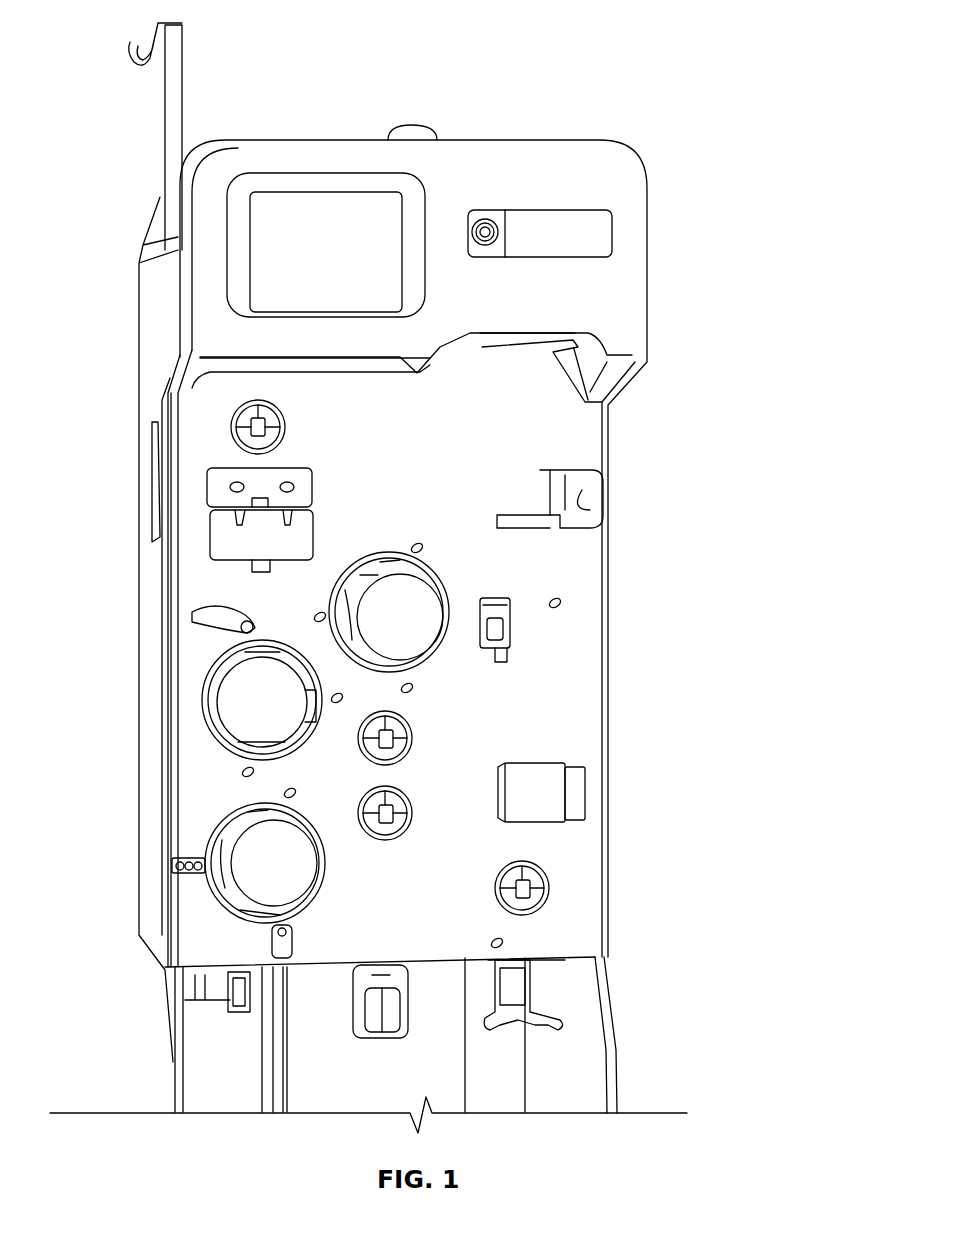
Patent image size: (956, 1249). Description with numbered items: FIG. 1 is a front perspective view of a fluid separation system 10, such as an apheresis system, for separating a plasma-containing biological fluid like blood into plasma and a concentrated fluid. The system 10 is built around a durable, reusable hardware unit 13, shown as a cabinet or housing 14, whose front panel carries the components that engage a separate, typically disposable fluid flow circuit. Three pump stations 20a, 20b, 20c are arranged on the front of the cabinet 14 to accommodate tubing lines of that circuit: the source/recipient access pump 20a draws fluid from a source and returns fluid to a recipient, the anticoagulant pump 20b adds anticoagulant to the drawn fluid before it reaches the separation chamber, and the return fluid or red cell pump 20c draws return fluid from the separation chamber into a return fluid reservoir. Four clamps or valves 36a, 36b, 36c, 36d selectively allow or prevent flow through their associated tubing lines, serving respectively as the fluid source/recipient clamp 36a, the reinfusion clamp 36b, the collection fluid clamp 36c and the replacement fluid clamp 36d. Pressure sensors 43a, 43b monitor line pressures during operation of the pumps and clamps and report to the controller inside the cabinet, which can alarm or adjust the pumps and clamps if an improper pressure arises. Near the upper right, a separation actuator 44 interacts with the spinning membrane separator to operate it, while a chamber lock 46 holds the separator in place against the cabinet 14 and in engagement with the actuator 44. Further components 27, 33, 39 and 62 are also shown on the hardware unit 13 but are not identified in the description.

The fluid separation system 10 is at (645, 147).
The hardware unit 13 is at (150, 521).
The cabinet or housing 14 is at (640, 275).
The source/recipient access pump 20a is at (250, 862).
The anticoagulant pump 20b is at (235, 712).
The return fluid pump 20c is at (420, 603).
The tubing clamp 27 is at (225, 1003).
The pressure sensor 33 is at (495, 637).
The fluid source/recipient clamp or valve 36a is at (410, 733).
The reinfusion clamp or valve 36b is at (497, 778).
The collection fluid clamp or valve 36c is at (543, 890).
The replacement fluid clamp or valve 36d is at (235, 427).
The tubing holder 39 is at (530, 995).
The pressure sensor 43a is at (210, 487).
The pressure sensor 43b is at (280, 475).
The separation actuator 44 is at (555, 348).
The chamber lock 46 is at (590, 490).
The tubing holder 62 is at (370, 1013).